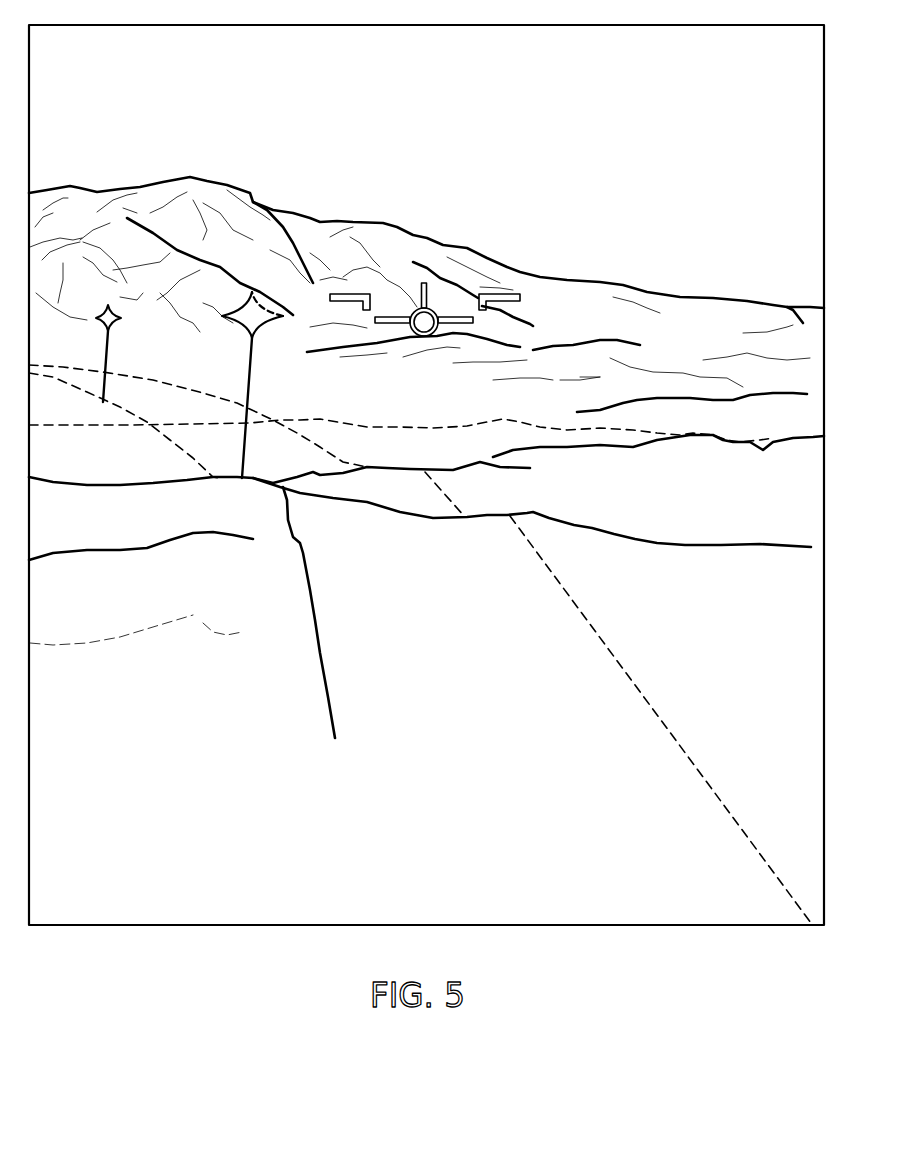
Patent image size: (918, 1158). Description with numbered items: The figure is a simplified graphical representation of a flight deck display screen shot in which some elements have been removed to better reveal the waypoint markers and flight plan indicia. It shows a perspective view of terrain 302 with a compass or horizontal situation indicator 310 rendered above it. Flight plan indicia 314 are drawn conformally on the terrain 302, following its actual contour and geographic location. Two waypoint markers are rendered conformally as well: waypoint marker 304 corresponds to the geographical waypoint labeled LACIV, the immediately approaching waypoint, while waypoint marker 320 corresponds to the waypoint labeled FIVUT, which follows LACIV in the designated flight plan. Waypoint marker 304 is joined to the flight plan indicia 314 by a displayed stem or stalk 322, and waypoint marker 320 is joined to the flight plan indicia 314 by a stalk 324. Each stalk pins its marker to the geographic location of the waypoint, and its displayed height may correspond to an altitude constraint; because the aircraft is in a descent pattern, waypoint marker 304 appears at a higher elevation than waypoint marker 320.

The terrain 302 is at (649, 573).
The waypoint marker 304 is at (256, 338).
The horizontal situation indicator 310 is at (432, 337).
The flight plan indicia 314 is at (150, 422).
The waypoint marker 320 is at (114, 328).
The stalk 322 is at (248, 402).
The stalk 324 is at (105, 355).